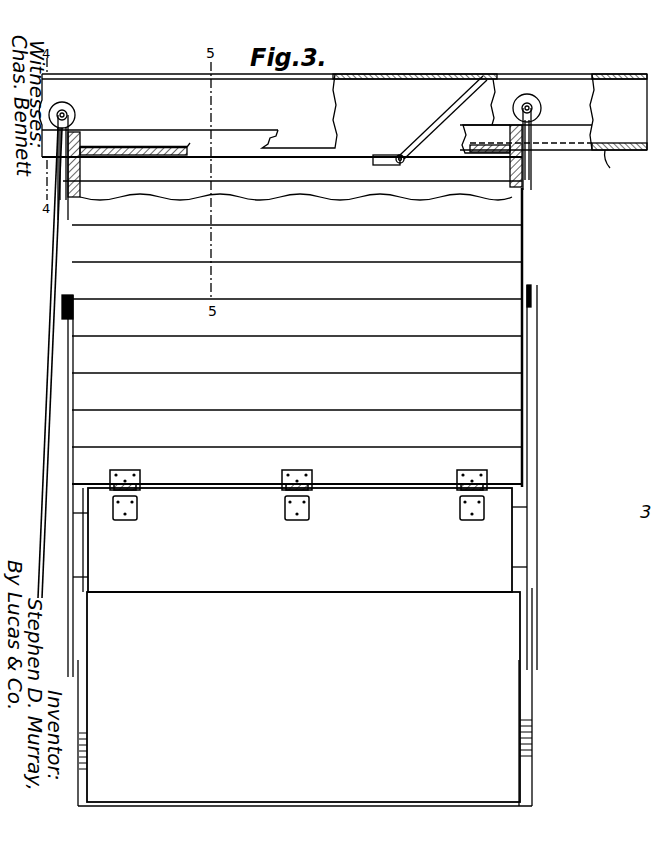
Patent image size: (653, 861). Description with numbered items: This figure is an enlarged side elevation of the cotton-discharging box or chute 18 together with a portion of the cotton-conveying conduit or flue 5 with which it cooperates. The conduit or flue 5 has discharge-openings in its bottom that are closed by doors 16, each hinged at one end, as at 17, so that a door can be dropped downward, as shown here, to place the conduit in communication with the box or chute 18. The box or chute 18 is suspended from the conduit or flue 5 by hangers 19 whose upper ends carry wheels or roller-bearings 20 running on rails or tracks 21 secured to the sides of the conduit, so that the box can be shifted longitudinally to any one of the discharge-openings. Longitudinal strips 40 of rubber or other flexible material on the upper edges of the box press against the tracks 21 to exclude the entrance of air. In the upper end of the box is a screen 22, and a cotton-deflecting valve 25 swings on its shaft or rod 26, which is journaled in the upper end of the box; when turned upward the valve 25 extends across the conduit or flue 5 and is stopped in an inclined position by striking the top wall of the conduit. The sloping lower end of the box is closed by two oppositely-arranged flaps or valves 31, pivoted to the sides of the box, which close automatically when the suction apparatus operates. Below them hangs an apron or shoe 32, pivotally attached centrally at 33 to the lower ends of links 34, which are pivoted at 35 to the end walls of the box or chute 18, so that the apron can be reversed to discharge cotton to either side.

The cotton-conveying conduit or flue 5 is at (343, 115).
The door 16 is at (53, 362).
The hinge 17 is at (612, 166).
The cotton-discharging box or chute 18 is at (297, 337).
The hanger 19 is at (71, 128).
The wheel or roller-bearing 20 is at (63, 104).
The rail or track 21 is at (526, 133).
The screen 22 is at (282, 169).
The cotton-deflecting valve 25 is at (440, 122).
The shaft or rod 26 is at (398, 156).
The door, flap, or valve 31 is at (297, 540).
The apron or shoe 32 is at (305, 697).
The central pivot 33 is at (538, 662).
The link 34 is at (70, 477).
The upper pivot 35 is at (62, 311).
The longitudinal strip 40 is at (486, 139).